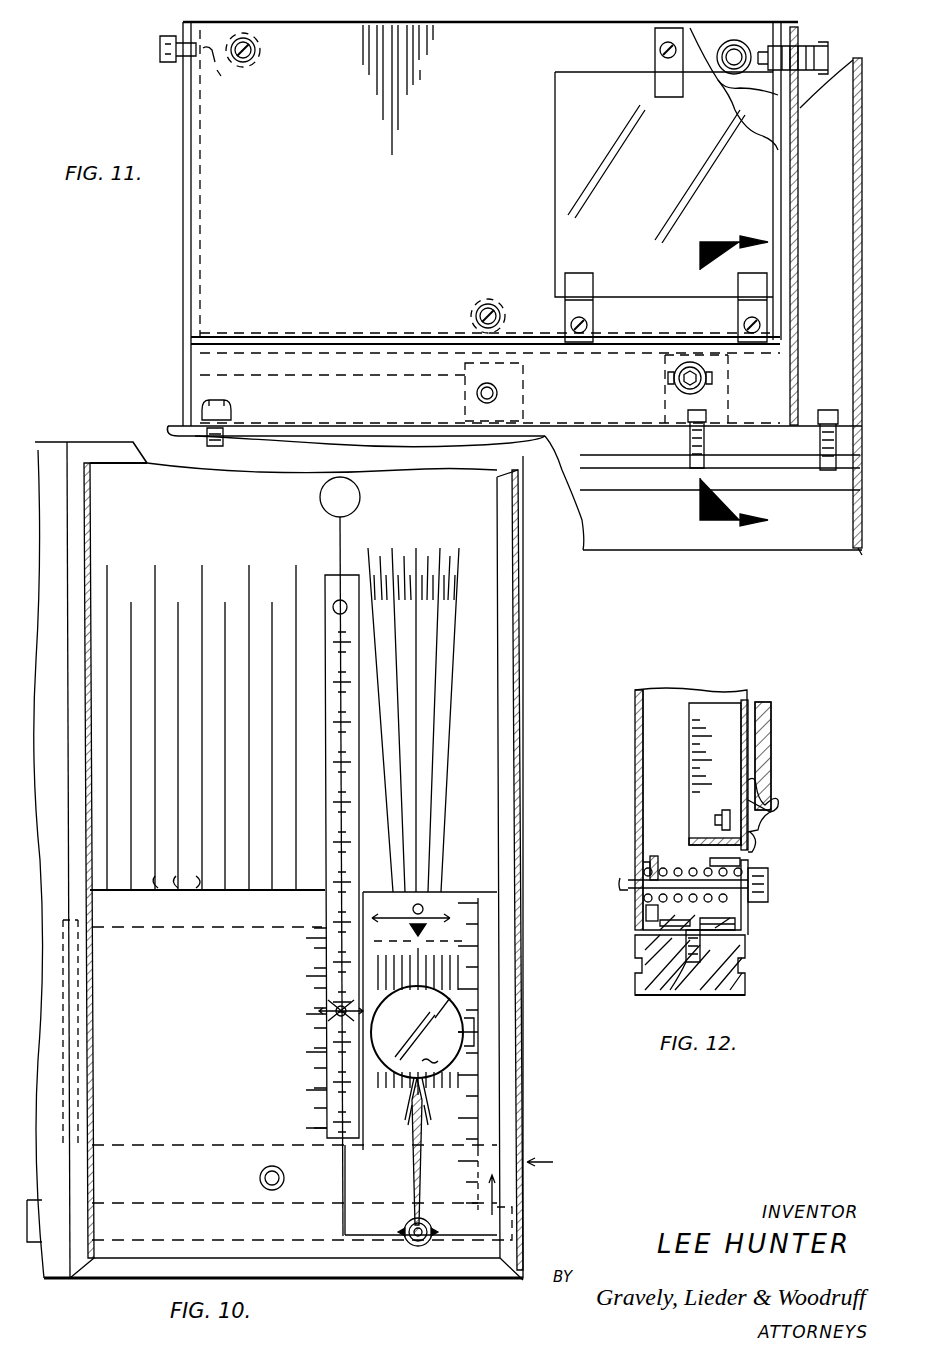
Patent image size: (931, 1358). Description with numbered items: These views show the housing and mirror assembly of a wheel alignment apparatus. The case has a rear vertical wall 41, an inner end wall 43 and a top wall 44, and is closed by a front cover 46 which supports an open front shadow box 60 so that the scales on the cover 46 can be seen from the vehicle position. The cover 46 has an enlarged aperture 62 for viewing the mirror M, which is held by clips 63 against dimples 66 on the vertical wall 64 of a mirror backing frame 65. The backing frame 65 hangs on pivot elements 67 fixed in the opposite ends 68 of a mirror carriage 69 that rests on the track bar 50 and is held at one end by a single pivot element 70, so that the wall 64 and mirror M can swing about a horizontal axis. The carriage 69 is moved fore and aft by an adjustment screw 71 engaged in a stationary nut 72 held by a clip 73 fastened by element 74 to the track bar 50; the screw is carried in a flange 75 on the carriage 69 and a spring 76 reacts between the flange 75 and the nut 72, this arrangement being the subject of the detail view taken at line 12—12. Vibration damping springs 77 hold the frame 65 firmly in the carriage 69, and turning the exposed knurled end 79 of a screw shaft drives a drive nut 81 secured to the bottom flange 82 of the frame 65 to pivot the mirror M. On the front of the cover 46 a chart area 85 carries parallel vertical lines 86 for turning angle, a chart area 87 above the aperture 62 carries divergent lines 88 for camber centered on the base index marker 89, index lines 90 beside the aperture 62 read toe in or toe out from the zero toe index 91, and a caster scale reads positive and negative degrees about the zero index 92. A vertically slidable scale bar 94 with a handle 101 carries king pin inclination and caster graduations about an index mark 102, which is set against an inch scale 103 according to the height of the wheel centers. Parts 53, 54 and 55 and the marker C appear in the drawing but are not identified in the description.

In FIG. 11, the section line 12— 12 is at (750, 374).
In FIG. 11, the rear vertical wall 41 is at (866, 112).
In FIG. 11, the inner end wall 43 is at (866, 210).
In FIG. 10, the inner end wall 43 is at (520, 656).
In FIG. 10, the top wall 44 is at (55, 445).
In FIG. 10, the front cover 46 is at (45, 462).
In FIG. 11, the track bar 50 is at (590, 498).
In FIG. 10, the track bar 50 is at (18, 1203).
In FIG. 12, the track bar 50 is at (732, 996).
In FIG. 11, the adjusting screw 53 is at (805, 428).
In FIG. 11, the lock nut 54 is at (846, 400).
In FIG. 11, the base block 55 is at (588, 478).
In FIG. 12, the base block 55 is at (636, 964).
In FIG. 10, the shadow box 60 is at (112, 1280).
In FIG. 10, the enlarged aperture 62 is at (380, 1002).
In FIG. 11, the clips 63 is at (654, 88).
In FIG. 12, the clips 63 is at (770, 806).
In FIG. 11, the vertical wall 64 is at (436, 200).
In FIG. 11, the mirror backing frame 65 is at (200, 240).
In FIG. 12, the mirror backing frame 65 is at (715, 708).
In FIG. 11, the dimples 66 is at (675, 100).
In FIG. 12, the dimples 66 is at (768, 780).
In FIG. 11, the pivot elements 67 is at (218, 80).
In FIG. 11, the opposite ends of mirror carriage 68 is at (795, 34).
In FIG. 12, the opposite ends of mirror carriage 68 is at (668, 695).
In FIG. 11, the mirror carriage 69 is at (172, 304).
In FIG. 10, the mirror carriage 69 is at (52, 1086).
In FIG. 12, the mirror carriage 69 is at (624, 790).
In FIG. 11, the single pivot element 70 is at (232, 410).
In FIG. 11, the adjustment screw 71 is at (680, 390).
In FIG. 10, the adjustment screw 71 is at (412, 1172).
In FIG. 12, the adjustment screw 71 is at (770, 884).
In FIG. 12, the stationary nut 72 is at (640, 870).
In FIG. 11, the clip 73 is at (732, 405).
In FIG. 12, the clip 73 is at (640, 906).
In FIG. 11, the fastening element 74 is at (690, 462).
In FIG. 12, the fastening element 74 is at (668, 990).
In FIG. 11, the flange 75 is at (196, 388).
In FIG. 12, the flange 75 is at (750, 912).
In FIG. 12, the spring 76 is at (680, 868).
In FIG. 11, the vibration damping springs 77 is at (262, 62).
In FIG. 11, the knurled end 79 is at (477, 394).
In FIG. 10, the knurled end 79 is at (260, 1178).
In FIG. 11, the drive nut 81 is at (524, 393).
In FIG. 11, the bottom flange 82 is at (345, 385).
In FIG. 10, the chart area 85 is at (138, 777).
In FIG. 10, the parallel vertical lines 86 is at (222, 884).
In FIG. 10, the chart area 87 is at (483, 731).
In FIG. 10, the divergent lines 88 is at (455, 788).
In FIG. 10, the base index marker 89 is at (418, 1246).
In FIG. 10, the index lines 90 is at (462, 985).
In FIG. 10, the zero toe index 91 is at (425, 918).
In FIG. 10, the zero index 92 is at (480, 1040).
In FIG. 10, the slidable scale bar 94 is at (324, 900).
In FIG. 10, the handle 101 is at (338, 590).
In FIG. 10, the index mark 102 is at (336, 1012).
In FIG. 10, the inch scale 103 is at (276, 985).
In FIG. 11, the mirror M is at (560, 128).
In FIG. 12, the mirror M is at (772, 724).
In FIG. 10, the center line C is at (553, 1162).